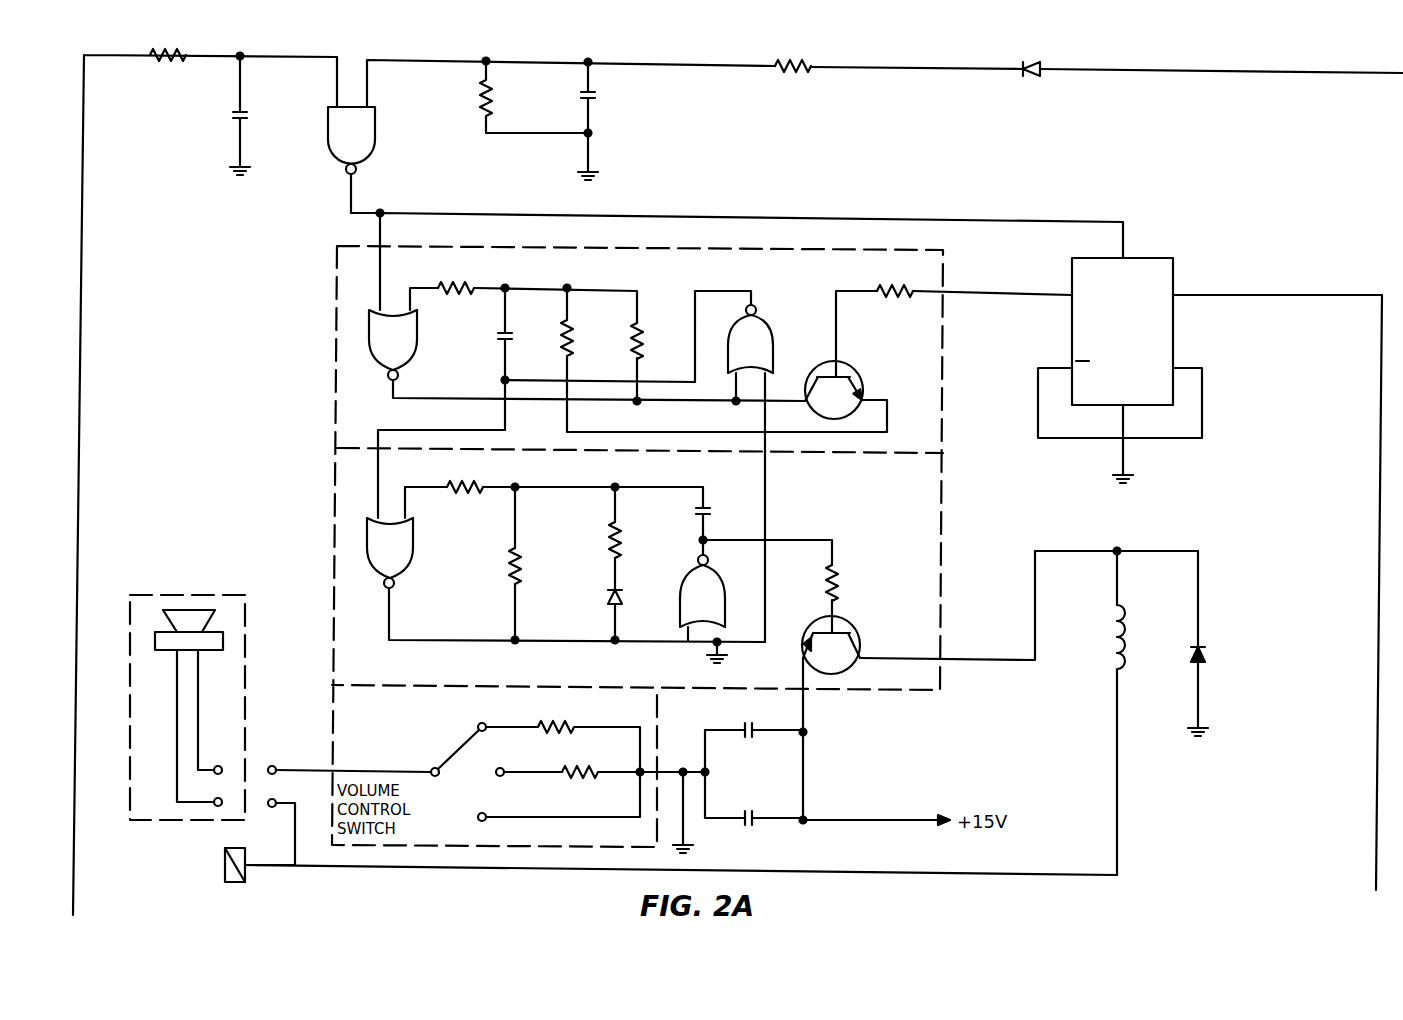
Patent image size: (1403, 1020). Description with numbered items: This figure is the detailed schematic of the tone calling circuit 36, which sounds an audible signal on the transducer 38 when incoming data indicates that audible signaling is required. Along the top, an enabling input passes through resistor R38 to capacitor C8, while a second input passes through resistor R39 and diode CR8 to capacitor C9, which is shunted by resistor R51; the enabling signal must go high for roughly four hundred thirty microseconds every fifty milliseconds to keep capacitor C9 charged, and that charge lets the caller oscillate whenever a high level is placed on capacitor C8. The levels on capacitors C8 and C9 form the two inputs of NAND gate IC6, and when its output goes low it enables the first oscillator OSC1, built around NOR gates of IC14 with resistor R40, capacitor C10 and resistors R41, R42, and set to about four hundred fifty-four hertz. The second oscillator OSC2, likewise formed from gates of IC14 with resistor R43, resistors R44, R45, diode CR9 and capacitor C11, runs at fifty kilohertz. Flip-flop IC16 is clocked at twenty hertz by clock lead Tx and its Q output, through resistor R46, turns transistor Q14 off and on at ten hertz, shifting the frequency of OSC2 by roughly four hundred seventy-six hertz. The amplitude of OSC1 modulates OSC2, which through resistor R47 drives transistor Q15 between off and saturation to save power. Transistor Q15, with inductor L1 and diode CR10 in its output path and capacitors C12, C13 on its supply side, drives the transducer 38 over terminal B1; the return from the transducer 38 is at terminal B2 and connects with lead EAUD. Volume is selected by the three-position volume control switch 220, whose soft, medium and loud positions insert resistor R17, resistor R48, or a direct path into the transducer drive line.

The resistor R38 is at (167, 45).
The capacitor C8 is at (222, 115).
The two-input NAND gate IC6 is at (351, 140).
The resistor R51 is at (513, 97).
The capacitor C9 is at (602, 121).
The resistor R39 is at (792, 55).
The diode CR8 is at (1027, 58).
The first oscillator OSC1 is at (337, 299).
The second oscillator OSC2 is at (333, 484).
The three position volume control switch 220 is at (332, 705).
The NOR gate integrated circuit IC14 is at (570, 466).
The resistor R40 is at (453, 277).
The capacitor C10 is at (483, 336).
The resistor R41 is at (586, 338).
The resistor R42 is at (656, 341).
The resistor R46 is at (891, 279).
The transistor Q14 is at (851, 385).
The flip-flop IC16 is at (1120, 370).
The clock lead TX Tx is at (1263, 296).
The resistor R43 is at (460, 476).
The resistor R44 is at (492, 566).
The resistor R45 is at (635, 540).
The diode CR9 is at (590, 599).
The capacitor C11 is at (686, 510).
The resistor R47 is at (851, 583).
The transistor Q15 is at (849, 645).
The inductor L1 is at (1106, 713).
The diode CR10 is at (1223, 643).
The tone calling circuit 36 is at (1221, 841).
The transducer 38 is at (150, 822).
The terminal B1 is at (278, 759).
The terminal B2 is at (278, 792).
The audio connector EAUD is at (251, 879).
The resistor R17 is at (535, 736).
The resistor R48 is at (549, 782).
The capacitor C12 is at (750, 718).
The capacitor C13 is at (750, 806).